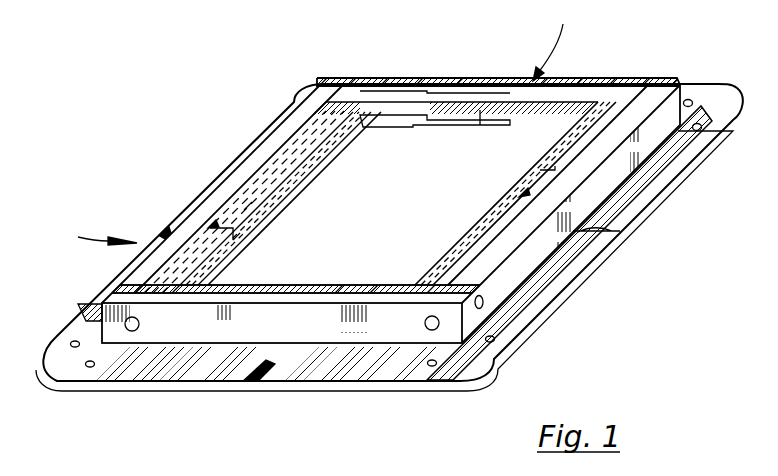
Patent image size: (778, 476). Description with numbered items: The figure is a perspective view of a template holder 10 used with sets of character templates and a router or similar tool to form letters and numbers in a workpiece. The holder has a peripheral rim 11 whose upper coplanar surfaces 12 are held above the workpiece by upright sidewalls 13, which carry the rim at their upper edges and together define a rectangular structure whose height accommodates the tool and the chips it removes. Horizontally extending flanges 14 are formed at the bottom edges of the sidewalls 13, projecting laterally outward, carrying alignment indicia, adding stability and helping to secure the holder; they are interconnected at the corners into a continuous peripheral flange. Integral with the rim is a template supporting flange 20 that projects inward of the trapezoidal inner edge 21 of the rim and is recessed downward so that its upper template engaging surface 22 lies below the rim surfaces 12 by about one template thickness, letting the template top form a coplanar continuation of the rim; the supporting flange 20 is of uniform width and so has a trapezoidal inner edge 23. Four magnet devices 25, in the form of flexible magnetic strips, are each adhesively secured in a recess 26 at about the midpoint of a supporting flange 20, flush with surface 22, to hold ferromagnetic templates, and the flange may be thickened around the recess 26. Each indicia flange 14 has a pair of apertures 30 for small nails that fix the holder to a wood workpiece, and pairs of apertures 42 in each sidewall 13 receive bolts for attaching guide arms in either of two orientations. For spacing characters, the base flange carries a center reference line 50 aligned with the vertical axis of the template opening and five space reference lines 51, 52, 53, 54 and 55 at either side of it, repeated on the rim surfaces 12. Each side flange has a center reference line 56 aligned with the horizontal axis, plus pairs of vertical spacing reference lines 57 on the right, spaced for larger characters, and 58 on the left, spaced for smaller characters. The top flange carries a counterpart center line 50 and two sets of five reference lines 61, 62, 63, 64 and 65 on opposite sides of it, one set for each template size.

The template holder 10 is at (92, 237).
The peripheral rim 11 is at (550, 44).
The upper coplanar surfaces 12 is at (245, 171).
The upright sidewalls 13 is at (316, 340).
The horizontally extending flanges 14 is at (562, 274).
The template supporting flange 20 is at (487, 235).
The inner edge of the rim 21 is at (331, 90).
The upper template engaging surface 22 is at (313, 140).
The inner edge of the support flange 23 is at (226, 244).
The magnet devices 25 is at (250, 208).
The recess 26 is at (283, 177).
The apertures 30 is at (86, 362).
The apertures 42 is at (140, 324).
The center reference line 50 is at (258, 382).
The space reference line 51 is at (203, 380).
The space reference line 52 is at (175, 374).
The space reference line 53 is at (165, 373).
The space reference line 54 is at (143, 372).
The space reference line 55 is at (100, 375).
The center reference line 56 is at (163, 226).
The vertical spacing reference lines 57 is at (699, 132).
The vertical spacing reference lines 58 is at (245, 148).
The reference line 61 is at (530, 78).
The reference line 62 is at (440, 79).
The reference line 63 is at (422, 79).
The reference line 64 is at (407, 62).
The reference line 65 is at (373, 79).